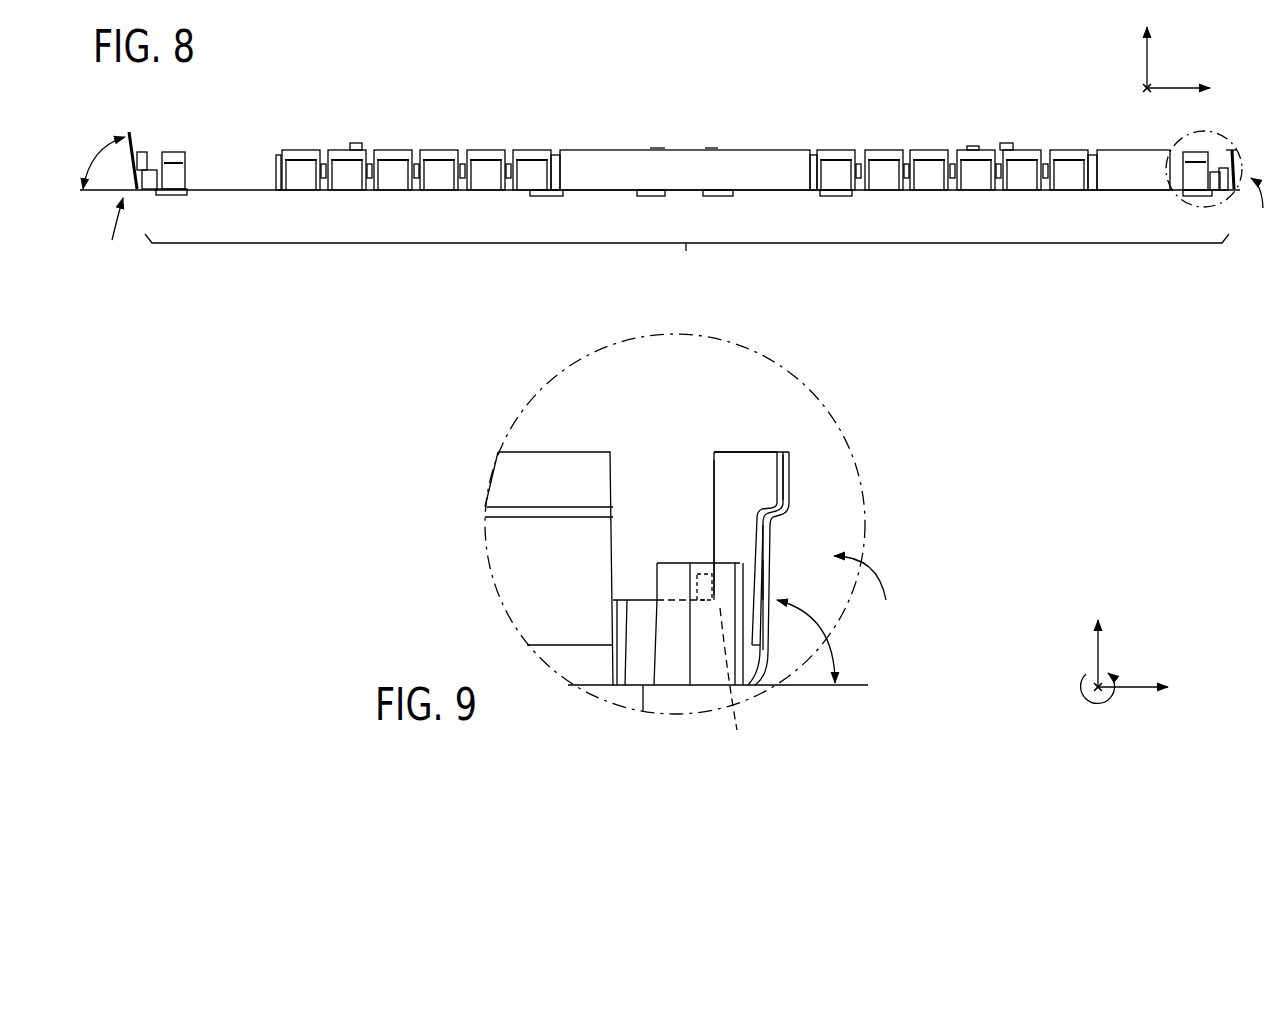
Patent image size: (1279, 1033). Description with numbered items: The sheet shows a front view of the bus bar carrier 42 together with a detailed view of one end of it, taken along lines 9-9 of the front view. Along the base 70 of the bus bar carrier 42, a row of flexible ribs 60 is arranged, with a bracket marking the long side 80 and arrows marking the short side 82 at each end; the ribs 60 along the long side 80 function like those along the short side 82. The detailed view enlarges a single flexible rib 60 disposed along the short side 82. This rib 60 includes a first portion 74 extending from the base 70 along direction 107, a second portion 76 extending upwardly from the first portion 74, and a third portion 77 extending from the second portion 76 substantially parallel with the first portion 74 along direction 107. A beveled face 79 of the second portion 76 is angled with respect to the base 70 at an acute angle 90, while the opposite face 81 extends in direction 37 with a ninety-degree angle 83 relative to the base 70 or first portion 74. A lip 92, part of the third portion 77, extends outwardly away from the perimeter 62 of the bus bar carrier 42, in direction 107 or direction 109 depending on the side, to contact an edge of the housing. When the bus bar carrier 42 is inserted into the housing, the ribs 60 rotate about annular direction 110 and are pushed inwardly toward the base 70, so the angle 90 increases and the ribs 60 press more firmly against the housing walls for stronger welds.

In FIG. 8, the bus bar carrier 42 is at (723, 90).
In FIG. 9, the bus bar carrier 42 is at (718, 408).
In FIG. 8, the flexible rib 60 is at (148, 153).
In FIG. 9, the flexible rib 60 is at (728, 500).
In FIG. 8, the perimeter 62 is at (191, 190).
In FIG. 8, the base 70 is at (347, 191).
In FIG. 9, the base 70 is at (642, 600).
In FIG. 8, the long side 80 is at (687, 260).
In FIG. 8, the short side 82 is at (688, 223).
In FIG. 9, the short side 82 is at (876, 590).
In FIG. 8, the angle 90 is at (100, 152).
In FIG. 9, the angle 90 is at (836, 650).
In FIG. 8, the lines 9- 9 is at (1242, 144).
In FIG. 8, the direction 37 is at (1147, 62).
In FIG. 9, the direction 37 is at (1099, 658).
In FIG. 8, the direction 107 is at (1172, 88).
In FIG. 9, the direction 107 is at (1128, 687).
In FIG. 8, the direction 109 is at (1145, 88).
In FIG. 9, the direction 109 is at (1096, 680).
In FIG. 9, the annular direction 110 is at (1080, 695).
In FIG. 9, the third portion 77 is at (743, 463).
In FIG. 9, the lip 92 is at (778, 483).
In FIG. 9, the face 81 is at (712, 538).
In FIG. 9, the face 79 is at (773, 547).
In FIG. 9, the second portion 76 is at (752, 560).
In FIG. 9, the angle 83 is at (703, 600).
In FIG. 9, the first portion 74 is at (737, 730).